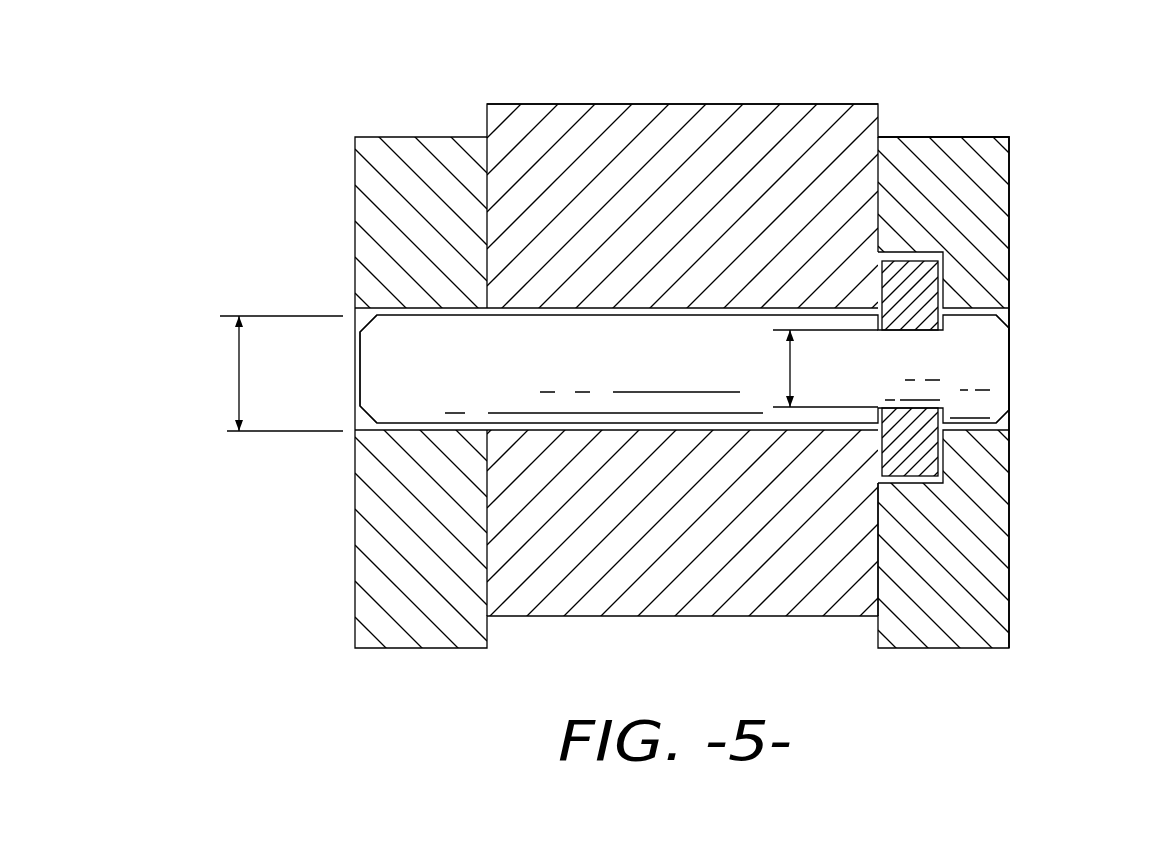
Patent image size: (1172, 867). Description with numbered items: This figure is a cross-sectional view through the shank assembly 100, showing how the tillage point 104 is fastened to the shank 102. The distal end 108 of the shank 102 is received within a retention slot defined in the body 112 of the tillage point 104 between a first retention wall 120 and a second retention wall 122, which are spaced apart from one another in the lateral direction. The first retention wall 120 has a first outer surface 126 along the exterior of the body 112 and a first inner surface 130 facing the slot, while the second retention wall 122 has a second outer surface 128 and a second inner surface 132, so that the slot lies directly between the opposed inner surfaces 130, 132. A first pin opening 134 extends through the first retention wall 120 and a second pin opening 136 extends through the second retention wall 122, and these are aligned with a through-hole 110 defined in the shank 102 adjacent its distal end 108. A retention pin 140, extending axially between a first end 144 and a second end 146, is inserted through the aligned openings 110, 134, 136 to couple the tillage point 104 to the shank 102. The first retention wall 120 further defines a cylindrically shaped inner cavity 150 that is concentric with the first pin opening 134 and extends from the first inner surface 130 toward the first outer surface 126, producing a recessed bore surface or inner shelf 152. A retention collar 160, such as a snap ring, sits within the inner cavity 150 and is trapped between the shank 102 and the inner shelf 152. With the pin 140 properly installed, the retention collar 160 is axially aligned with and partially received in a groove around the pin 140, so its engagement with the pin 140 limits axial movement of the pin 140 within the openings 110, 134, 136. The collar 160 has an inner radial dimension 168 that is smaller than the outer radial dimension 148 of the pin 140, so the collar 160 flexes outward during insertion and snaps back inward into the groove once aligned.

The shank assembly 100 is at (647, 326).
The shank 102 is at (604, 100).
The tillage point 104 is at (1012, 135).
The body 112 is at (943, 392).
The distal end 108 is at (680, 140).
The through-hole 110 is at (622, 306).
The first retention wall 120 is at (972, 210).
The second retention wall 122 is at (388, 203).
The first outer surface 126 is at (1010, 600).
The second outer surface 128 is at (355, 602).
The first inner surface 130 is at (876, 585).
The second inner surface 132 is at (489, 583).
The first pin opening 134 is at (975, 298).
The second pin opening 136 is at (410, 432).
The retention pin 140 is at (517, 384).
The first end 144 is at (357, 362).
The second end 146 is at (1011, 365).
The outer radial dimension 148 is at (239, 375).
The inner cavity 150 is at (905, 247).
The inner shelf 152 is at (918, 453).
The retention collar 160 is at (933, 483).
The inner radial dimension 168 is at (790, 368).